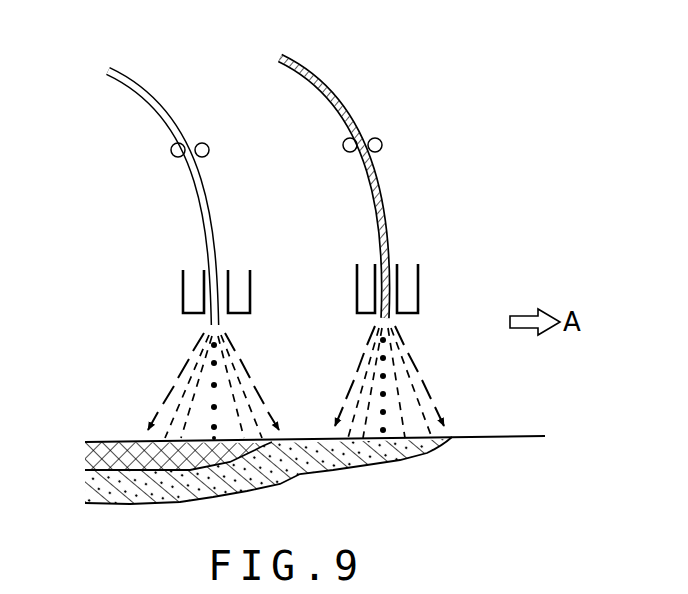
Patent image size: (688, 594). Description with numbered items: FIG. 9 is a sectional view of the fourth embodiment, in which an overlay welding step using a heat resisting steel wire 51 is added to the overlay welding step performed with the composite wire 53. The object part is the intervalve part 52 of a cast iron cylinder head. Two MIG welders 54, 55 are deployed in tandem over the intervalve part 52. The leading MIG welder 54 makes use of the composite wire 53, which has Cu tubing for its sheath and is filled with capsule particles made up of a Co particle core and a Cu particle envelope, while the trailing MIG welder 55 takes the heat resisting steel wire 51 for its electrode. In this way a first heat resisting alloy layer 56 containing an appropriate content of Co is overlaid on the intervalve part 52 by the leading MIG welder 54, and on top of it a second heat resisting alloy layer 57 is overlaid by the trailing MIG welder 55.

The heat resisting steel wire 51 is at (216, 222).
The intervalve part 52 is at (486, 429).
The composite wire 53 is at (356, 121).
The leading MIG welder 54 is at (409, 252).
The trailing MIG welder 55 is at (178, 281).
The first heat resisting alloy layer 56 is at (408, 464).
The second heat resisting alloy layer 57 is at (111, 437).